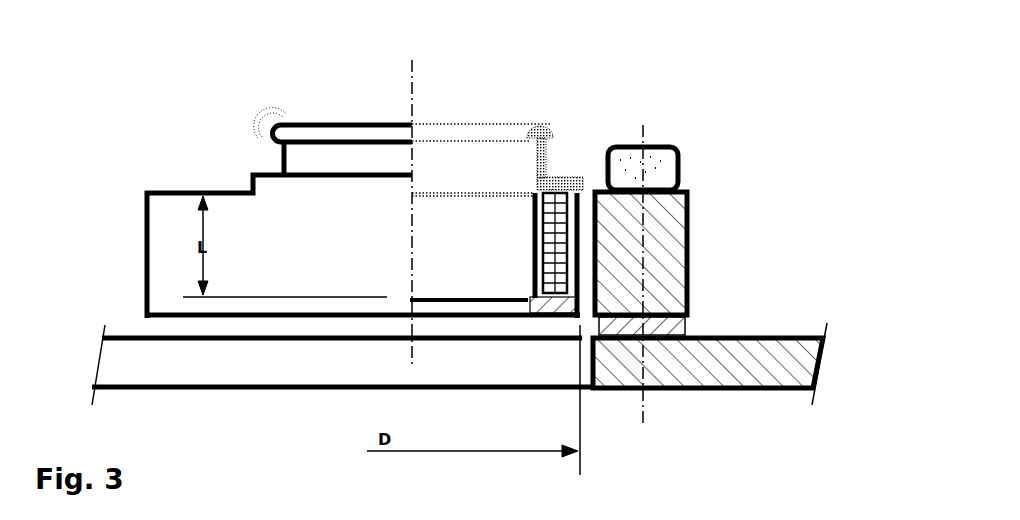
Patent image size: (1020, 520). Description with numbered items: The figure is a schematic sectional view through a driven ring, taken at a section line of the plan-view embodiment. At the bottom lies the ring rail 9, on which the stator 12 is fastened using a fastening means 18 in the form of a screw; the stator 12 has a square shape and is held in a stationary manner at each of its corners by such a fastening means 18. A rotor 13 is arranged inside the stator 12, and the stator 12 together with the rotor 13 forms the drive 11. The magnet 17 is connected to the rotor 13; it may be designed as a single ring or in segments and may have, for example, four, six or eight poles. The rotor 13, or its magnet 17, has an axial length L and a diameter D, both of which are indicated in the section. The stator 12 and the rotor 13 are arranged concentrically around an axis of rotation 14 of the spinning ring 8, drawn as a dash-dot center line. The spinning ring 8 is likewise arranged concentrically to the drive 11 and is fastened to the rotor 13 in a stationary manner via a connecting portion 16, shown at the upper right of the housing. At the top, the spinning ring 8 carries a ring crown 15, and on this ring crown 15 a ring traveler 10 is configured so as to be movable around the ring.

The spinning ring 8 is at (313, 157).
The ring rail 9 is at (783, 335).
The ring traveler 10 is at (270, 123).
The drive 11 is at (170, 220).
The stator 12 is at (660, 257).
The rotor 13 is at (535, 310).
The axis of rotation 14 is at (410, 97).
The ring crown 15 is at (538, 128).
The connecting portion 16 is at (565, 177).
The magnet 17 is at (555, 267).
The fastening means 18 is at (673, 147).